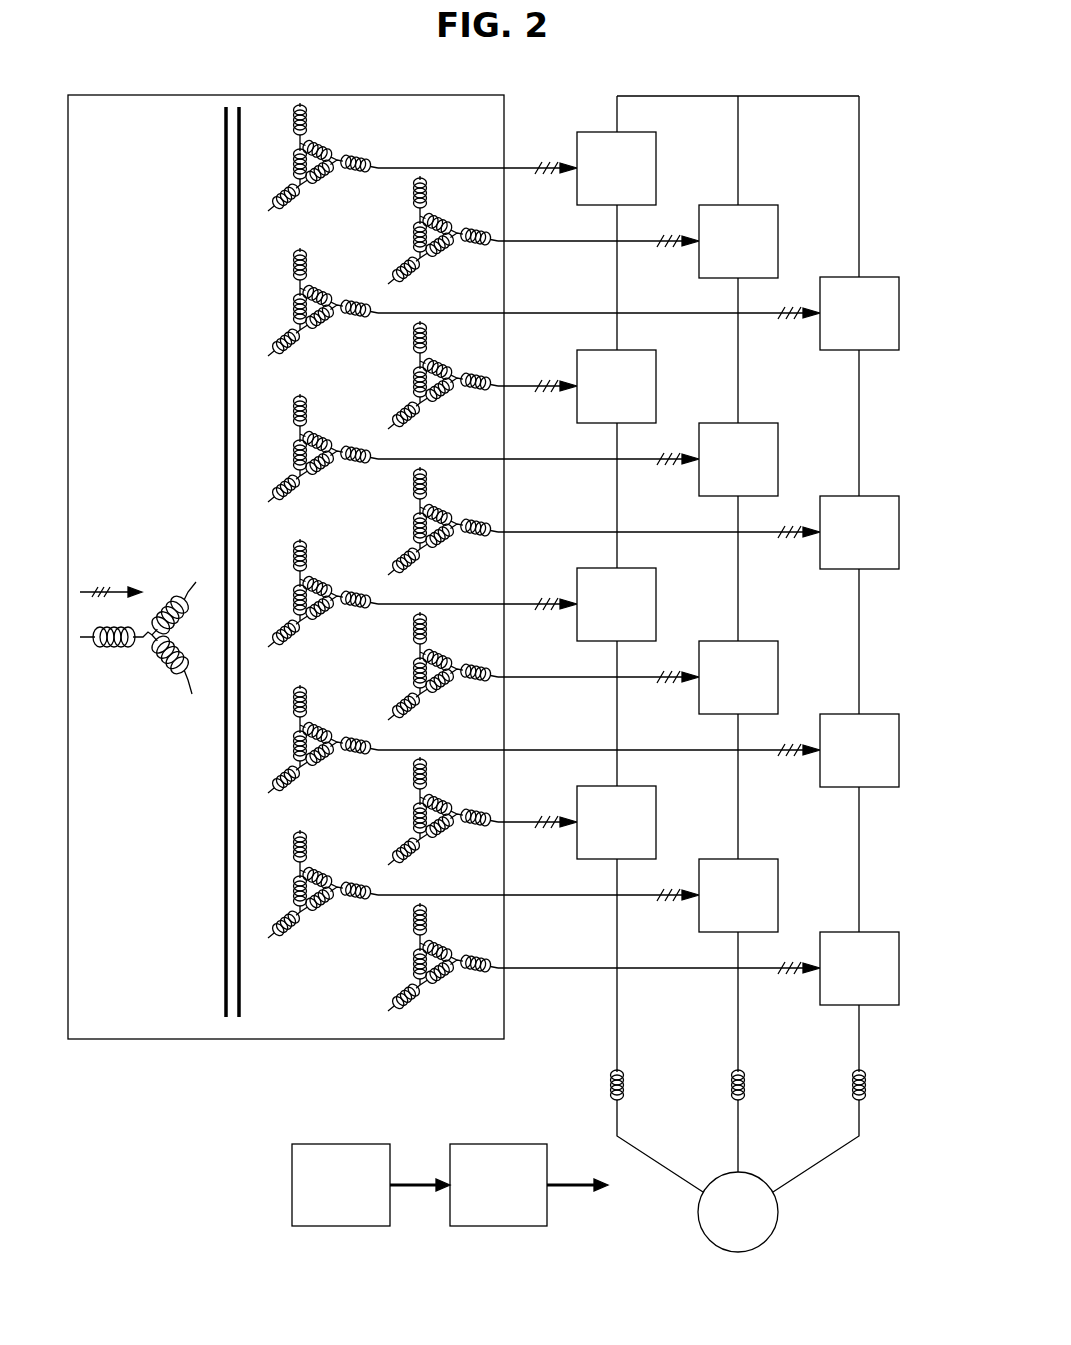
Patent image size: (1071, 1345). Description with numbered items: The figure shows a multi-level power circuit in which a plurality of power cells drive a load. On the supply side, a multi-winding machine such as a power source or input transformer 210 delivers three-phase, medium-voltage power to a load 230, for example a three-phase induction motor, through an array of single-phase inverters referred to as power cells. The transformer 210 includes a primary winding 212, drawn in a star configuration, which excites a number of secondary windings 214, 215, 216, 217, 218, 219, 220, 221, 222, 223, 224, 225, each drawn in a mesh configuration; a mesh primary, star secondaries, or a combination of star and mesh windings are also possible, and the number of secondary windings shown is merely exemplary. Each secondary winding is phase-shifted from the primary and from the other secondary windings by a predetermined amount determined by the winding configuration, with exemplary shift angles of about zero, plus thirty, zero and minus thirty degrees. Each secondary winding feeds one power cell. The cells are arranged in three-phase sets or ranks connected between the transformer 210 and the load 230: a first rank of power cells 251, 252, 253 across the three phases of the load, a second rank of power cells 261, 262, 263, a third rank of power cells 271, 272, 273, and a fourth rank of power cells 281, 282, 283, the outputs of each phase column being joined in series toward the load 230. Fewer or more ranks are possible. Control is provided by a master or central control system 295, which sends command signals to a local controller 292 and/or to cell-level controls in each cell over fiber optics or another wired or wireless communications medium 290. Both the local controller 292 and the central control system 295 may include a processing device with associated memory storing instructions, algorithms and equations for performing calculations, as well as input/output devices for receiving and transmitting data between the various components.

The input transformer 210 is at (140, 94).
The primary winding 212 is at (165, 580).
The secondary winding 214 is at (348, 128).
The secondary winding 215 is at (468, 201).
The secondary winding 216 is at (348, 273).
The secondary winding 217 is at (468, 346).
The secondary winding 218 is at (348, 419).
The secondary winding 219 is at (468, 492).
The secondary winding 220 is at (348, 564).
The secondary winding 221 is at (468, 637).
The secondary winding 222 is at (348, 710).
The secondary winding 223 is at (468, 782).
The secondary winding 224 is at (348, 855).
The secondary winding 225 is at (468, 928).
The power cell 251 is at (620, 159).
The power cell 252 is at (742, 232).
The power cell 253 is at (863, 304).
The power cell 261 is at (620, 377).
The power cell 262 is at (742, 450).
The power cell 263 is at (863, 523).
The power cell 271 is at (620, 595).
The power cell 272 is at (742, 668).
The power cell 273 is at (863, 741).
The power cell 281 is at (620, 813).
The power cell 282 is at (742, 886).
The power cell 283 is at (863, 959).
The load 230 is at (698, 1214).
The communications medium 290 is at (420, 1188).
The local controller 292 is at (481, 1142).
The central control system 295 is at (322, 1142).